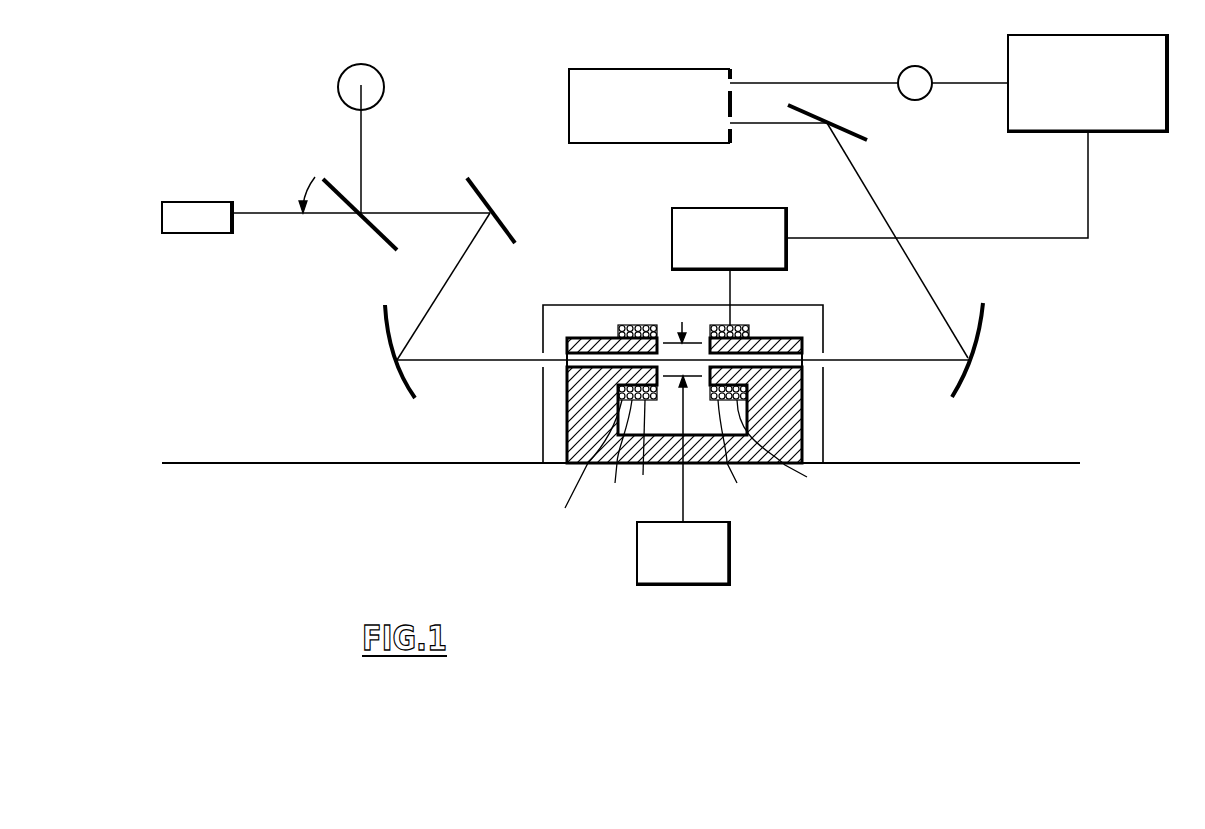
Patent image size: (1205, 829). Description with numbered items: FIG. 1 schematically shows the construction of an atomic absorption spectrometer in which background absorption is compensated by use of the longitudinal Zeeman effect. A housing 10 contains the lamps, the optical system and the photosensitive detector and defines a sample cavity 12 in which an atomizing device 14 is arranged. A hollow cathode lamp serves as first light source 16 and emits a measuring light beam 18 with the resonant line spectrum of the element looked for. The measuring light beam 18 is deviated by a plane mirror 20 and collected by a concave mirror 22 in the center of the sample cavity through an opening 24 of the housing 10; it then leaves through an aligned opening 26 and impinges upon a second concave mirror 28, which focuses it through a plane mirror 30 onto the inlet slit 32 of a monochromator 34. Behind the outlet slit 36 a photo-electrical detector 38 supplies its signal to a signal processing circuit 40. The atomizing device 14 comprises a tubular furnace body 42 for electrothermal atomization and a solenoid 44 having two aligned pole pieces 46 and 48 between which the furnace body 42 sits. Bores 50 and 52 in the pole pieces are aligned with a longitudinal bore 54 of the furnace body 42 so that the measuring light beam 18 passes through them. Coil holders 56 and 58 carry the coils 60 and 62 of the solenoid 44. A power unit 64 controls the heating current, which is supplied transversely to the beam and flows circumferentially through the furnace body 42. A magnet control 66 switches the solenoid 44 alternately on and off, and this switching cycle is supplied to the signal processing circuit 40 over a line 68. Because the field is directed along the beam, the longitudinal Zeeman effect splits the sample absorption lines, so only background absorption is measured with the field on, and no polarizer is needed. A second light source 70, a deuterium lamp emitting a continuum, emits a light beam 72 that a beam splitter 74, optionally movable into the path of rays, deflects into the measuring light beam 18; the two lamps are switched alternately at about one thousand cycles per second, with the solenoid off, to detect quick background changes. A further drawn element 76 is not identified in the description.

The housing 10 is at (320, 463).
The sample cavity 12 is at (550, 463).
The atomizing device 14 is at (699, 420).
The first light source 16 is at (178, 202).
The measuring light beam 18 is at (402, 213).
The plane mirror 20 is at (503, 223).
The concave mirror 22 is at (384, 328).
The opening 24 is at (543, 367).
The opening 26 is at (823, 357).
The second concave mirror 28 is at (985, 333).
The plane mirror 30 is at (866, 140).
The inlet slit 32 is at (730, 125).
The monochromator 34 is at (610, 69).
The outlet slit 36 is at (730, 82).
The photo-electrical detector 38 is at (923, 68).
The signal processing circuit 40 is at (1093, 35).
The furnace body 42 is at (673, 343).
The solenoid 44 is at (615, 454).
The pole piece 46 is at (658, 449).
The pole piece 48 is at (787, 448).
The bore 50 is at (582, 338).
The bore 52 is at (793, 340).
The longitudinal bore 54 is at (697, 343).
The coil holder 56 is at (621, 325).
The coil holder 58 is at (747, 387).
The coil 60 is at (576, 461).
The coil 62 is at (741, 454).
The power unit 64 is at (693, 585).
The magnet control 66 is at (787, 222).
The line 68 is at (1088, 182).
The second light source 70 is at (363, 64).
The light beam 72 is at (361, 138).
The beam splitter 74 is at (380, 237).
The magnet yoke 76 is at (792, 443).